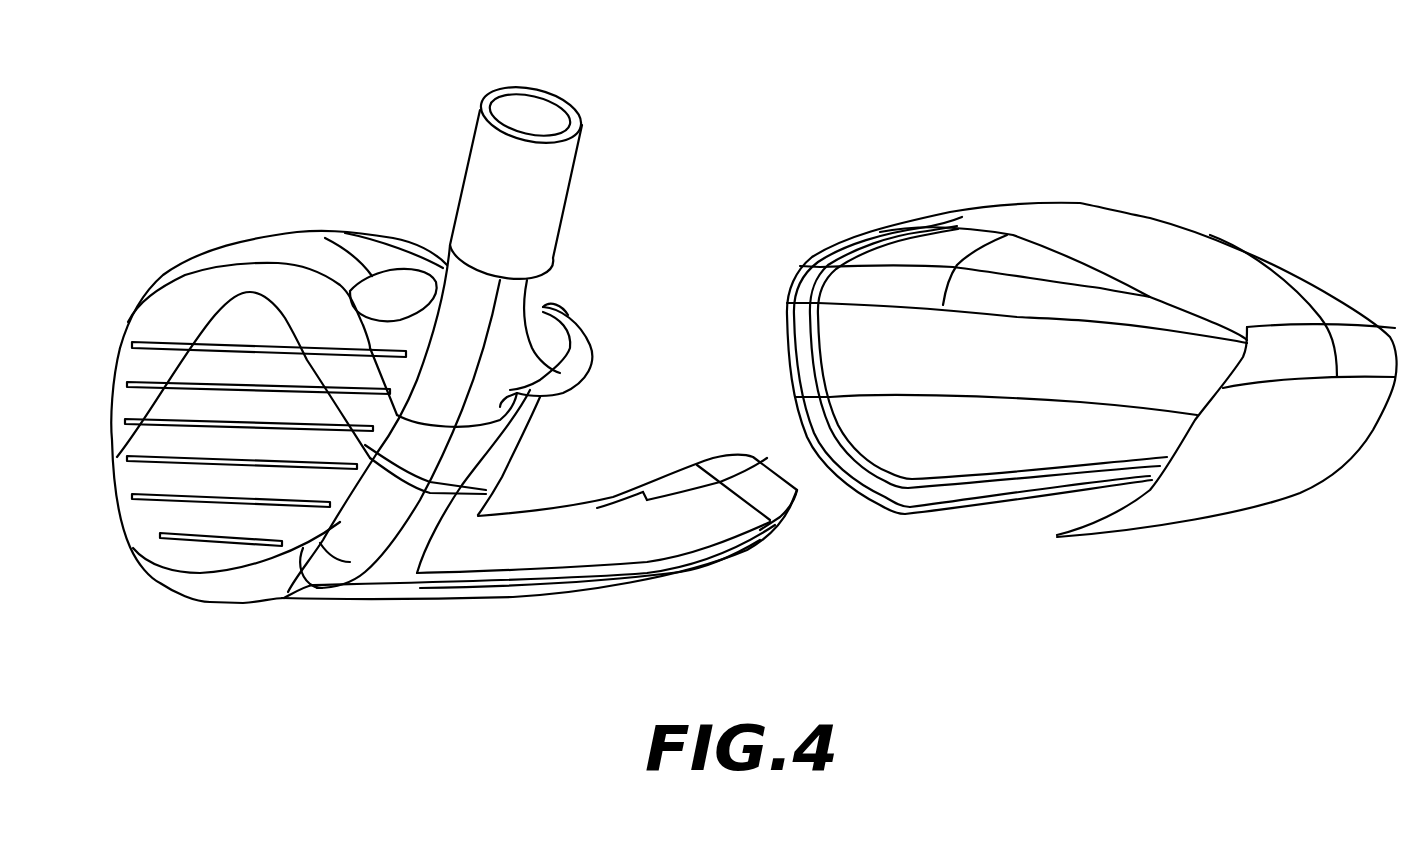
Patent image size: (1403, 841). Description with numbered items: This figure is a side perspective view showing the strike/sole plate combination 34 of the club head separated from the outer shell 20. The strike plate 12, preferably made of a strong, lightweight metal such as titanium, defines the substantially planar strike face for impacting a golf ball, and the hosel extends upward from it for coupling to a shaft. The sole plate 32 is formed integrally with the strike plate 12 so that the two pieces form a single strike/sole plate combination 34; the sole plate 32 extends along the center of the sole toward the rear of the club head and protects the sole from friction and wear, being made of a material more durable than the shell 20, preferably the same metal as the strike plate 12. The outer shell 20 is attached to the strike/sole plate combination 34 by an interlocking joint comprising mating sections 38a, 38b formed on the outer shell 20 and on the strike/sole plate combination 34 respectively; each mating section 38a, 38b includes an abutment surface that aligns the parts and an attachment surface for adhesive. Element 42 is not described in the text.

The strike plate 12 is at (197, 262).
The outer shell 20 is at (1143, 212).
The sole plate 32 is at (517, 603).
The strike/sole plate combination 34 is at (327, 620).
The mating section 38a is at (805, 280).
The mating section 38b is at (590, 346).
The lower flange strip 42 is at (913, 477).